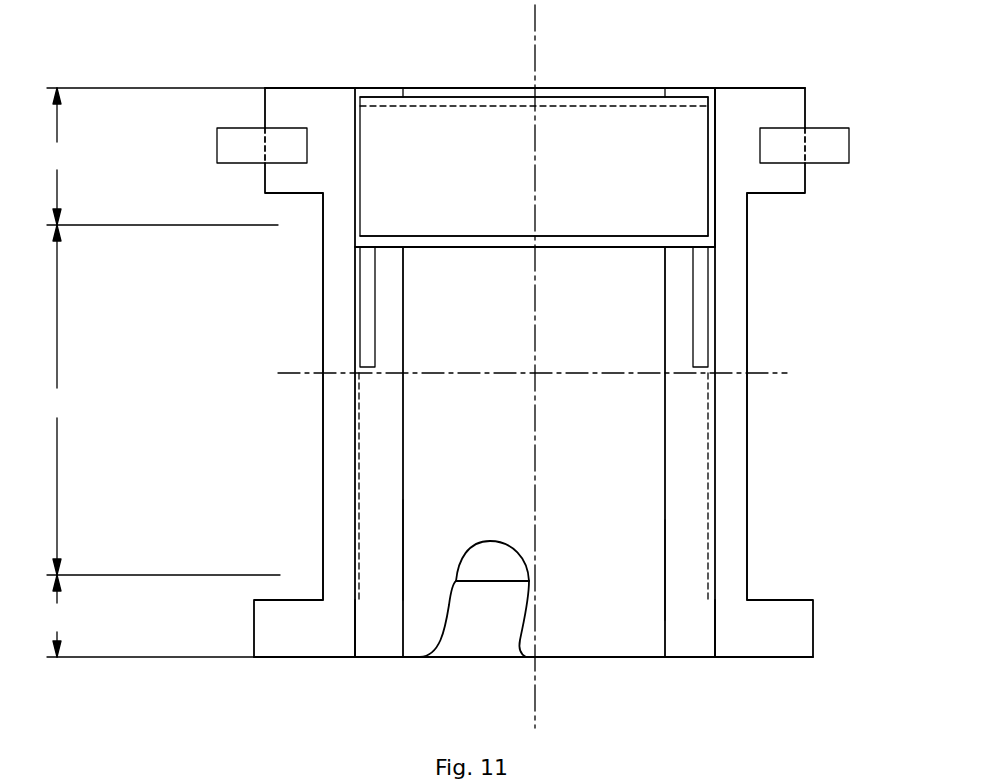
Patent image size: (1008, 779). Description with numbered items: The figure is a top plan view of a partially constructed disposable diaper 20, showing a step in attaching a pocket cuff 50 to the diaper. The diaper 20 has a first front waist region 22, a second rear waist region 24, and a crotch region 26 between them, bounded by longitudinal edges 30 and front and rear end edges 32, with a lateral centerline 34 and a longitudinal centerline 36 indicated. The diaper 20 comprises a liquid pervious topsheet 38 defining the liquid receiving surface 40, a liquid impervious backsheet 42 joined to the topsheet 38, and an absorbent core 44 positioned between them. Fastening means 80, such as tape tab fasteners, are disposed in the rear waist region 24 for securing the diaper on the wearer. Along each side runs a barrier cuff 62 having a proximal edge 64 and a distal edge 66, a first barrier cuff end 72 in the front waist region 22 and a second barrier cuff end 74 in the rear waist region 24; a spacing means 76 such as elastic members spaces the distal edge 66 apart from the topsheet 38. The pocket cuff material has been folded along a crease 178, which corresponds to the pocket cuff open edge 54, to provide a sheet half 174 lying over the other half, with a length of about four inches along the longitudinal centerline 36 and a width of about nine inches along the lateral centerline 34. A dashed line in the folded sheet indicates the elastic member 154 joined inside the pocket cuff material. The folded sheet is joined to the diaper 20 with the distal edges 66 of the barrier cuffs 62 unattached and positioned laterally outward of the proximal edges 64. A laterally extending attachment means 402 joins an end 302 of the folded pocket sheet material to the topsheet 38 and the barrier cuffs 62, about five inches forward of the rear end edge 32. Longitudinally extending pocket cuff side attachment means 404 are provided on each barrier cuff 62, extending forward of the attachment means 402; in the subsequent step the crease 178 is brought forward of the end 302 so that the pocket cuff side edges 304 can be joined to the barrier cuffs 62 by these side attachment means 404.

The diaper 20 is at (772, 548).
The first front waist region 22 is at (163, 616).
The second rear waist region 24 is at (156, 156).
The crotch region 26 is at (162, 400).
The longitudinal edges 30 is at (322, 292).
The front and rear end edges 32 is at (555, 87).
The lateral centerline 34 is at (775, 373).
The longitudinal centerline 36 is at (537, 45).
The liquid pervious topsheet 38 is at (615, 630).
The liquid receiving surface 40 is at (628, 466).
The liquid impervious backsheet 42 is at (468, 633).
The absorbent core 44 is at (493, 572).
The pocket cuff 50 is at (410, 201).
The pocket cuff open edge 54 is at (517, 97).
The barrier cuff 62 is at (383, 488).
The proximal edge 64 is at (403, 537).
The distal edge 66 is at (352, 439).
The first barrier cuff end 72 is at (375, 642).
The second barrier cuff end 74 is at (380, 88).
The spacing means 76 is at (358, 584).
The fastening means 80 is at (196, 152).
The seal 154 is at (383, 107).
The sheet half 174 is at (695, 203).
The crease 178 is at (458, 97).
The end of the folded pocket sheet material 302 is at (497, 237).
The pocket cuff side edges 304 is at (360, 144).
The laterally extending attachment means 402 is at (558, 242).
The pocket cuff side attachment means 404 is at (368, 320).